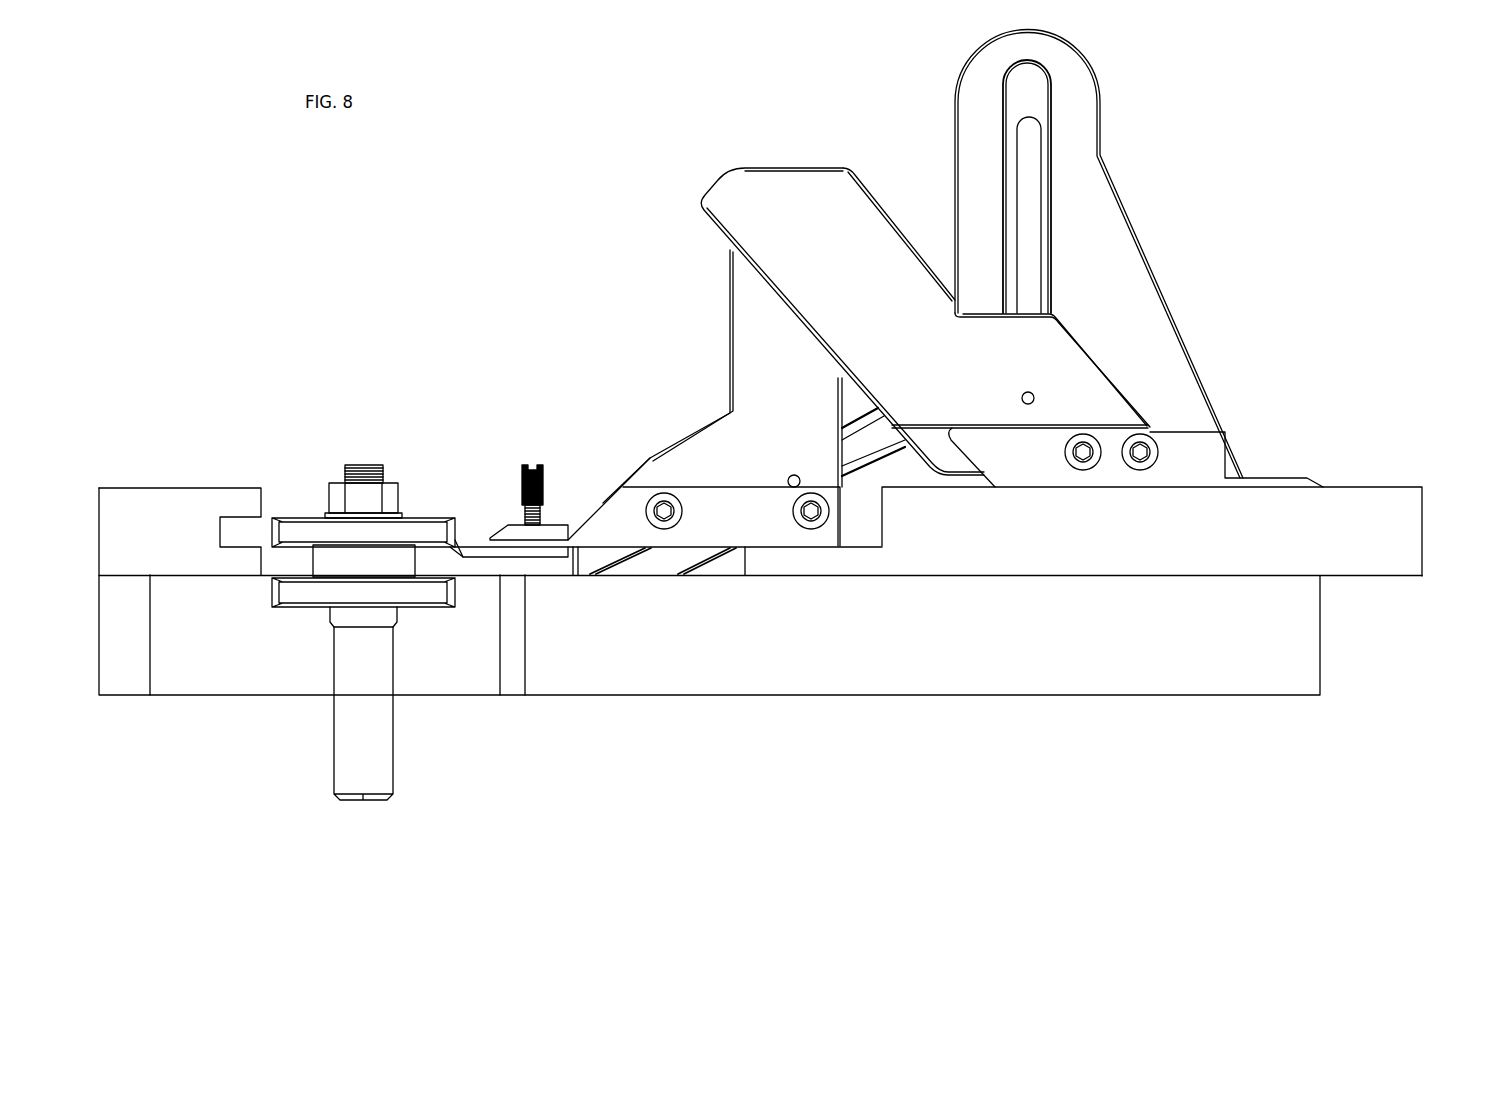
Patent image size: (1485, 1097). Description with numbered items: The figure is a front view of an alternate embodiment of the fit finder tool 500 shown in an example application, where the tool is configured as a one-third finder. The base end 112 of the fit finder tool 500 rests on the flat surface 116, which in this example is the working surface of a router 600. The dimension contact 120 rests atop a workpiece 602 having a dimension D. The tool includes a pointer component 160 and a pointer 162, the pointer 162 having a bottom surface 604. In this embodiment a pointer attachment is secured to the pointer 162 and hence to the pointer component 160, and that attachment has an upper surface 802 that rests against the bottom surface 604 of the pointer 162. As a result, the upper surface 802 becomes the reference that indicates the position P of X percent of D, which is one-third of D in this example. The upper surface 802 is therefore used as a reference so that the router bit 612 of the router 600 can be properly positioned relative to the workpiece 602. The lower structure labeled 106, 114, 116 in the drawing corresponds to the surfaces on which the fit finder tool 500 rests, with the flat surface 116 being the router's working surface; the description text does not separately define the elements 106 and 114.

The fit finder tool 500 is at (1200, 133).
The base end 112 is at (1235, 470).
The dimension contact 120 is at (1280, 487).
The pointer component 160 is at (697, 452).
The pointer 162 is at (568, 500).
The workpiece 602 is at (1403, 547).
The base 106 is at (783, 591).
The rail 114 is at (783, 591).
The flat surface 116 is at (1320, 577).
The bottom surface 604 is at (527, 548).
The upper surface 802 is at (474, 481).
The position P is at (462, 543).
The router 600 is at (260, 732).
The router bit 612 is at (365, 808).